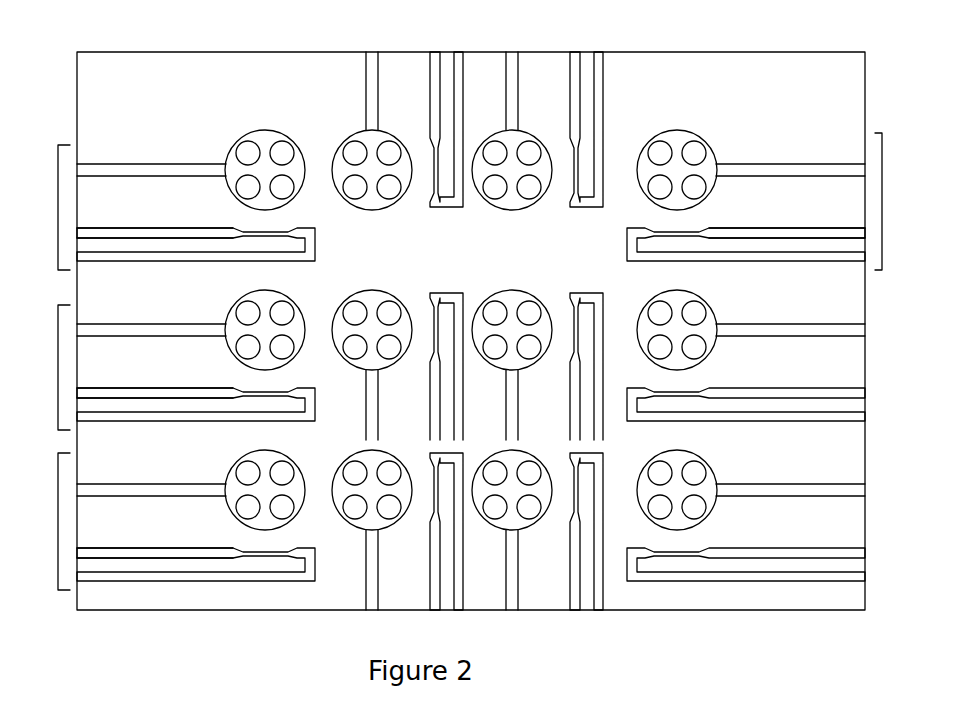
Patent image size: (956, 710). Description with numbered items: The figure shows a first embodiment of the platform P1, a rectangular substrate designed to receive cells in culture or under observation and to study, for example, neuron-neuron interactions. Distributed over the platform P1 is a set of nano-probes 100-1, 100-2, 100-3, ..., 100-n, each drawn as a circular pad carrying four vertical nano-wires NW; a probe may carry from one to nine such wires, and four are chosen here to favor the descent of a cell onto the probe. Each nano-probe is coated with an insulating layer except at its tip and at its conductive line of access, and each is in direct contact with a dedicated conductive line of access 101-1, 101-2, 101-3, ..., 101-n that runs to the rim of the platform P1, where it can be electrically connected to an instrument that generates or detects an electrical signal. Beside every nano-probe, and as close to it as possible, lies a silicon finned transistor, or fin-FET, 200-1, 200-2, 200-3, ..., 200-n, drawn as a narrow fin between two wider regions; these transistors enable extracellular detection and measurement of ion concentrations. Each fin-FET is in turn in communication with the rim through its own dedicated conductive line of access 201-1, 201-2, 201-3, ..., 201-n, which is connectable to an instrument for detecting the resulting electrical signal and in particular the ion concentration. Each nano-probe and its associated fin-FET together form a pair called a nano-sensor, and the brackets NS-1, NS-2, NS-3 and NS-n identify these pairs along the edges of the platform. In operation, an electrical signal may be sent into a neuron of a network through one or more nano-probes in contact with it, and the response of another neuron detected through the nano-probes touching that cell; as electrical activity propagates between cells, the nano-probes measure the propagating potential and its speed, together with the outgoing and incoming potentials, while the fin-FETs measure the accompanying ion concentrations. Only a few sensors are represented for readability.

The platform P1 is at (650, 52).
The vertical nano-wire NW is at (283, 151).
The nano-probe 100-1 is at (226, 135).
The nano-probe 100-2 is at (233, 302).
The nano-probe 100-3 is at (233, 464).
The nano-probe 100-n is at (675, 130).
The conductive line of access 101-1 is at (182, 164).
The conductive line of access 101-2 is at (178, 324).
The conductive line of access 101-3 is at (168, 484).
The conductive line of access 101-n is at (750, 164).
The fin-FET 200-1 is at (250, 232).
The fin-FET 200-2 is at (257, 392).
The fin-FET 200-3 is at (250, 552).
The fin-FET 200-n is at (668, 234).
The conductive line of access 201-1 is at (152, 228).
The conductive line of access 201-2 is at (160, 388).
The conductive line of access 201-3 is at (153, 548).
The conductive line of access 201-n is at (772, 228).
The nano-sensor NS-1 is at (40, 207).
The nano-sensor NS-2 is at (40, 367).
The nano-sensor NS-3 is at (40, 521).
The nano-sensor NS-n is at (903, 201).